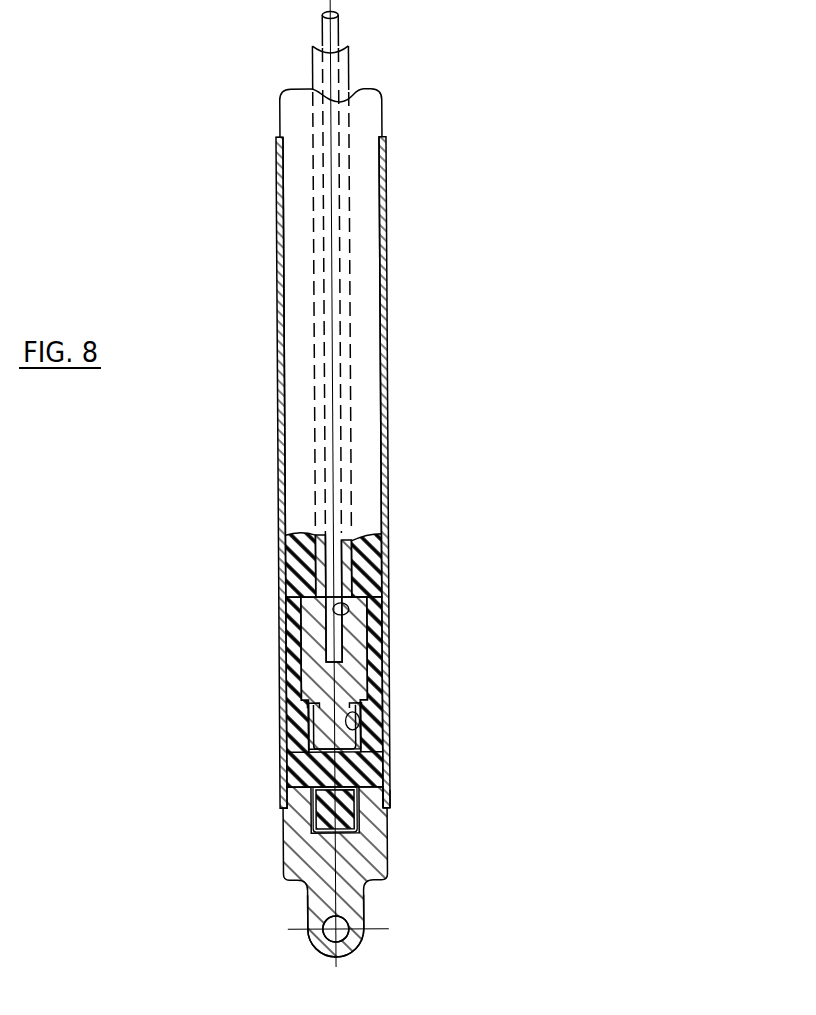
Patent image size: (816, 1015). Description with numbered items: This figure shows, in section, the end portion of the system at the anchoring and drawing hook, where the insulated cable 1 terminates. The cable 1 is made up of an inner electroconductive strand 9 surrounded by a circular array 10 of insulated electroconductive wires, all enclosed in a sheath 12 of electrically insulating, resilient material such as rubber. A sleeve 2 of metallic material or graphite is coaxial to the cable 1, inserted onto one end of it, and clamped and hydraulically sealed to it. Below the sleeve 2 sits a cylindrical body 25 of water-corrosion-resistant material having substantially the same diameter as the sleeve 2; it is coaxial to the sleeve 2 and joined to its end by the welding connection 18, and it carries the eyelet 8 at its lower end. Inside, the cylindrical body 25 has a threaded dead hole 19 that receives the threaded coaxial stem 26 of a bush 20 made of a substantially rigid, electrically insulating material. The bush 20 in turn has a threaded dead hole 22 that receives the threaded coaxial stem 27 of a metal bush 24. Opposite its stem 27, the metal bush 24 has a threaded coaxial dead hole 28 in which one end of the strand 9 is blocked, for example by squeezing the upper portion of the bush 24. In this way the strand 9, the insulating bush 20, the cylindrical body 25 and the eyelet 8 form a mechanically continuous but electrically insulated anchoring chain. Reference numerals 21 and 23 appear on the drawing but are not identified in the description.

The insulated cable 1 is at (279, 120).
The sleeve 2 is at (386, 228).
The eyelet 8 is at (303, 907).
The inner electroconductive strand 9 is at (338, 30).
The circular array of insulated electroconductive wires 10 is at (350, 69).
The sheath 12 is at (365, 122).
The welding connection 18 is at (286, 808).
The threaded dead hole 19 is at (312, 826).
The bush 20 is at (303, 776).
The casing end edge 21 is at (386, 815).
The threaded dead hole 22 is at (357, 735).
The cup 23 is at (322, 735).
The metal bush 24 is at (355, 659).
The cylindrical body 25 is at (350, 881).
The threaded coaxial stem 26 is at (358, 822).
The threaded coaxial stem 27 is at (313, 712).
The threaded coaxial dead hole 28 is at (346, 618).